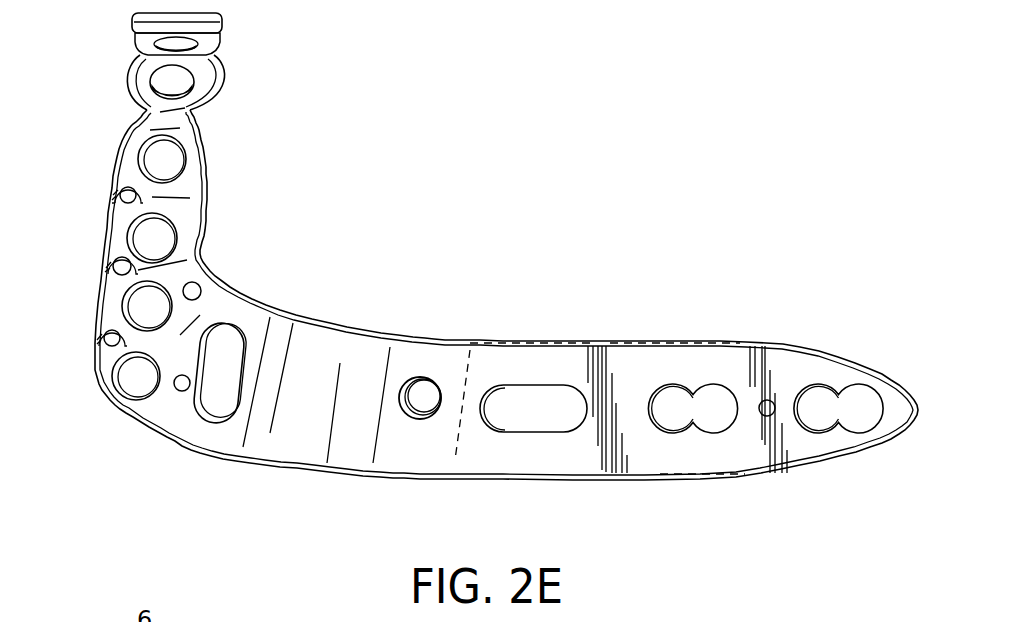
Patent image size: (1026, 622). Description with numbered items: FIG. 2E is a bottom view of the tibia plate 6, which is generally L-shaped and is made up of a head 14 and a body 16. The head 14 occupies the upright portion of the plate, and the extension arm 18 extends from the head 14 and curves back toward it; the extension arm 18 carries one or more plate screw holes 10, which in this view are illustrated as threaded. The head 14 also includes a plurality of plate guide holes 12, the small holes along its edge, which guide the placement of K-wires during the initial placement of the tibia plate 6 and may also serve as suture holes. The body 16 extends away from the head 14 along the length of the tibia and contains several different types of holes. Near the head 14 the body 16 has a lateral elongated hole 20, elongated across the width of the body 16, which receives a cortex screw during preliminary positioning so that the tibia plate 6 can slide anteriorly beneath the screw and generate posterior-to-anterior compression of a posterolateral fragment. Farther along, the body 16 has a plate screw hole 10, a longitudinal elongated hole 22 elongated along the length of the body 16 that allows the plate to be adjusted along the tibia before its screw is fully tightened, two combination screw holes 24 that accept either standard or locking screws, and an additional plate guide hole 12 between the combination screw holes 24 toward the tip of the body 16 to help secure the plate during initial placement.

The tibia plate 6 is at (603, 195).
The plate screw hole 10 is at (152, 157).
The plate guide hole 12 is at (123, 197).
The head 14 is at (107, 393).
The body 16 is at (565, 457).
The extension arm 18 is at (215, 78).
The lateral elongated hole 20 is at (230, 362).
The longitudinal elongated hole 22 is at (535, 403).
The combination screw hole 24 is at (703, 410).